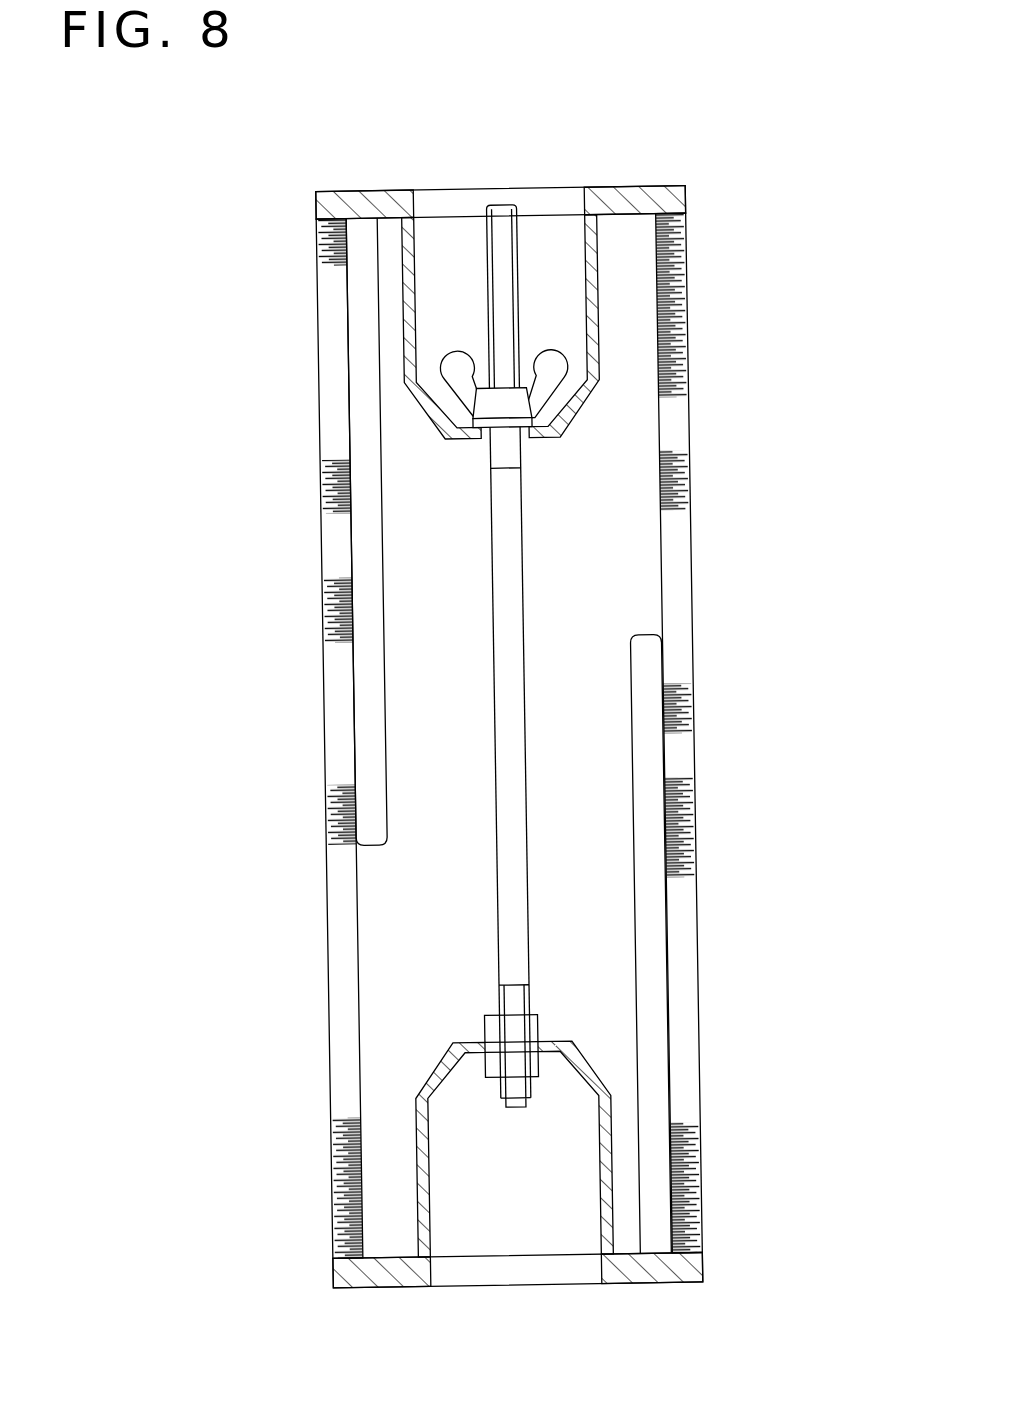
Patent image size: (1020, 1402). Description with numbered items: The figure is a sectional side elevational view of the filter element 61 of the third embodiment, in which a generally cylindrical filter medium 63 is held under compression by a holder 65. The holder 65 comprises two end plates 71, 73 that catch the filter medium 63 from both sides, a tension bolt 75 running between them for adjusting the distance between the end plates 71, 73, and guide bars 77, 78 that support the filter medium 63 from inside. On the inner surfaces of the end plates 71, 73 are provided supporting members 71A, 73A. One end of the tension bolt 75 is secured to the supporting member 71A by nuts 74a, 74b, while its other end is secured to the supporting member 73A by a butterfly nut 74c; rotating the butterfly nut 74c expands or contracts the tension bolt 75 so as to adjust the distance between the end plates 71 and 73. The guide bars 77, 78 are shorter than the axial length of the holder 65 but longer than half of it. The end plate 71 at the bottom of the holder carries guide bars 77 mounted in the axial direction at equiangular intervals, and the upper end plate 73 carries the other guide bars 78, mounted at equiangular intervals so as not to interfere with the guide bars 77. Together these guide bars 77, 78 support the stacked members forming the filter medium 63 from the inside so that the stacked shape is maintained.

The filter element 61 is at (710, 117).
The filter medium 63 is at (688, 363).
The holder 65 is at (593, 186).
The end plate 71 is at (630, 1286).
The supporting member 71A is at (607, 1147).
The end plate 73 is at (393, 187).
The supporting member 73A is at (593, 282).
The nut 74a is at (513, 1065).
The nut 74b is at (513, 1028).
The butterfly nut 74c is at (517, 405).
The tension bolt 75 is at (510, 545).
The guide bar 77 is at (650, 748).
The guide bar 78 is at (363, 738).